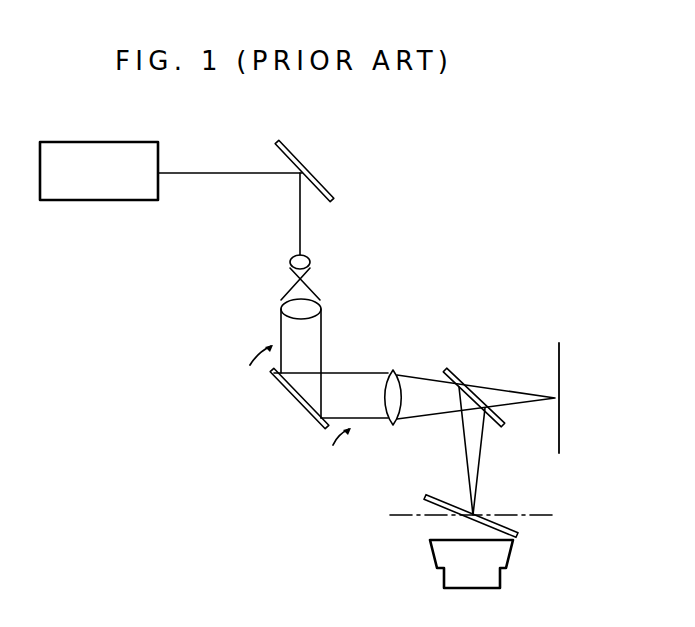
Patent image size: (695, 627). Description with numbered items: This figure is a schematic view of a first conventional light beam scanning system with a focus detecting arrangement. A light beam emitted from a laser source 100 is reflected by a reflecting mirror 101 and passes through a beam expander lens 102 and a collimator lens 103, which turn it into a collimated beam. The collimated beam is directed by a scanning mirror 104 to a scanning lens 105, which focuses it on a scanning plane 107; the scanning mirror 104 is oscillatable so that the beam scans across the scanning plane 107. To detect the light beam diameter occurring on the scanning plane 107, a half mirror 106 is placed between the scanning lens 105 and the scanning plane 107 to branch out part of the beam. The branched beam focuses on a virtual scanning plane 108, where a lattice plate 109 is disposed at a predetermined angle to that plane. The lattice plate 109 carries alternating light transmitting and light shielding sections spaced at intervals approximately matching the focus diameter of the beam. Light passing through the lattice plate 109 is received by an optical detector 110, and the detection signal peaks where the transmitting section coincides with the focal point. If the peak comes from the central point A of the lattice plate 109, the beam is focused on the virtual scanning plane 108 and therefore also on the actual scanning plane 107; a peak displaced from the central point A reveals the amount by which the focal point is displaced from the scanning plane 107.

The laser source 100 is at (107, 200).
The reflecting mirror 101 is at (317, 183).
The beam expander lens 102 is at (311, 261).
The collimator lens 103 is at (322, 305).
The scanning mirror 104 is at (312, 412).
The scanning lens 105 is at (397, 423).
The half mirror 106 is at (453, 369).
The scanning plane 107 is at (559, 358).
The virtual scanning plane 108 is at (548, 515).
The lattice plate 109 is at (423, 497).
The optical detector 110 is at (505, 577).
The central point A is at (474, 515).